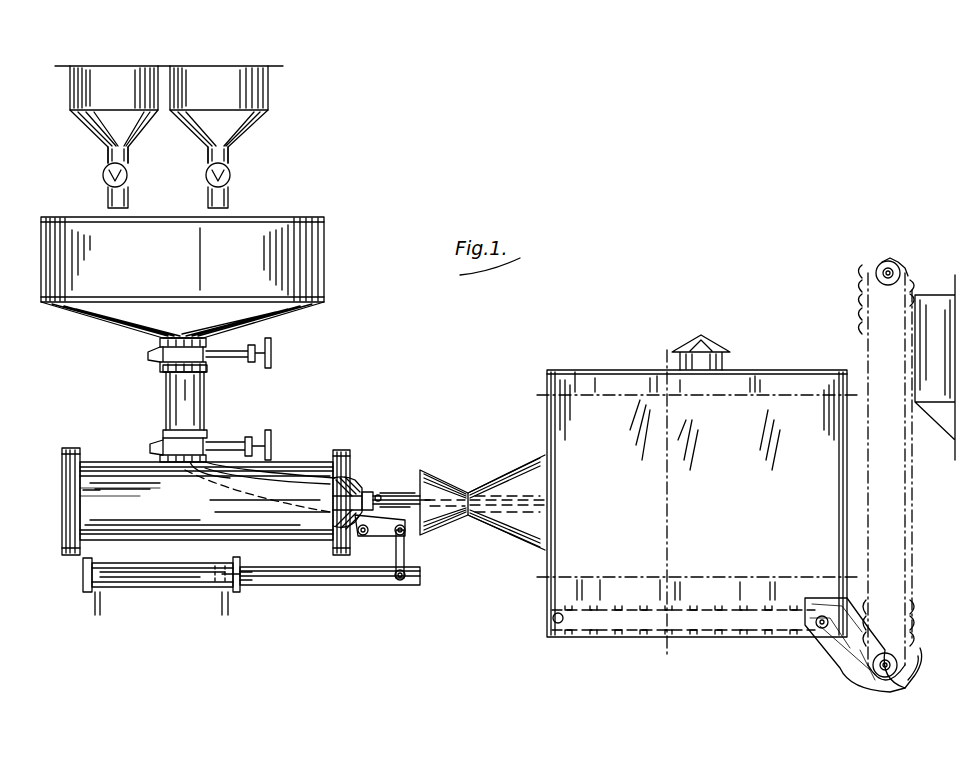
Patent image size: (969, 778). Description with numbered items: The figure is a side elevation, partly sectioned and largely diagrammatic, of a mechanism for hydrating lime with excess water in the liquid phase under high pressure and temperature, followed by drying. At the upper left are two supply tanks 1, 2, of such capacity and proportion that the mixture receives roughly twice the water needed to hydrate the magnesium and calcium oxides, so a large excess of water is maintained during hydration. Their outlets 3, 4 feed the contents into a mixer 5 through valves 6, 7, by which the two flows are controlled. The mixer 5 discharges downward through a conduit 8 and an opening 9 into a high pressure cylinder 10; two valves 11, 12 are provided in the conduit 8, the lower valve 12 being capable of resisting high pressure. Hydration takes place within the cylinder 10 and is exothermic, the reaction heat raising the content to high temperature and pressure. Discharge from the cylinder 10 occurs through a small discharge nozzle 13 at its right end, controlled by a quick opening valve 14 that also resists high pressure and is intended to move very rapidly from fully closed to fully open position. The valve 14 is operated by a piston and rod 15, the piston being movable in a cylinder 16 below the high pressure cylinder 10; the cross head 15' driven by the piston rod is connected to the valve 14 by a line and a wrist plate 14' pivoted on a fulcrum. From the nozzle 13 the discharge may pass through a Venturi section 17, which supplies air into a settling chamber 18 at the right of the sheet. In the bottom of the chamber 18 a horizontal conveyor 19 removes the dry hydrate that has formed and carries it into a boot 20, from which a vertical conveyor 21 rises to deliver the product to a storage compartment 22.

The supply tank 1 is at (114, 114).
The supply tank 2 is at (219, 114).
The outlet 3 is at (110, 154).
The outlet 4 is at (226, 154).
The mixer 5 is at (182, 277).
The valve 6 is at (103, 177).
The valve 7 is at (230, 177).
The conduit 8 is at (204, 403).
The opening 9 is at (190, 466).
The high pressure cylinder 10 is at (150, 515).
The valve 11 is at (160, 356).
The valve 12 is at (162, 447).
The discharge nozzle 13 is at (348, 480).
The quick opening valve 14 is at (376, 484).
The wrist plate 14' is at (401, 478).
The piston and rod 15 is at (248, 594).
The cross head 15' is at (330, 591).
The cylinder 16 is at (165, 587).
The Venturi section 17 is at (518, 488).
The settling chamber 18 is at (697, 495).
The horizontal conveyor 19 is at (570, 637).
The boot 20 is at (855, 672).
The vertical conveyor 21 is at (905, 600).
The storage compartment 22 is at (928, 296).